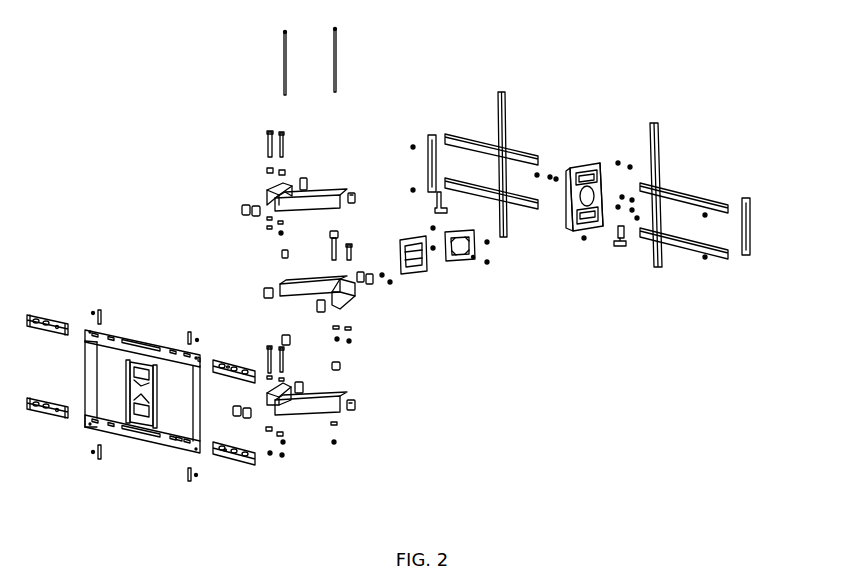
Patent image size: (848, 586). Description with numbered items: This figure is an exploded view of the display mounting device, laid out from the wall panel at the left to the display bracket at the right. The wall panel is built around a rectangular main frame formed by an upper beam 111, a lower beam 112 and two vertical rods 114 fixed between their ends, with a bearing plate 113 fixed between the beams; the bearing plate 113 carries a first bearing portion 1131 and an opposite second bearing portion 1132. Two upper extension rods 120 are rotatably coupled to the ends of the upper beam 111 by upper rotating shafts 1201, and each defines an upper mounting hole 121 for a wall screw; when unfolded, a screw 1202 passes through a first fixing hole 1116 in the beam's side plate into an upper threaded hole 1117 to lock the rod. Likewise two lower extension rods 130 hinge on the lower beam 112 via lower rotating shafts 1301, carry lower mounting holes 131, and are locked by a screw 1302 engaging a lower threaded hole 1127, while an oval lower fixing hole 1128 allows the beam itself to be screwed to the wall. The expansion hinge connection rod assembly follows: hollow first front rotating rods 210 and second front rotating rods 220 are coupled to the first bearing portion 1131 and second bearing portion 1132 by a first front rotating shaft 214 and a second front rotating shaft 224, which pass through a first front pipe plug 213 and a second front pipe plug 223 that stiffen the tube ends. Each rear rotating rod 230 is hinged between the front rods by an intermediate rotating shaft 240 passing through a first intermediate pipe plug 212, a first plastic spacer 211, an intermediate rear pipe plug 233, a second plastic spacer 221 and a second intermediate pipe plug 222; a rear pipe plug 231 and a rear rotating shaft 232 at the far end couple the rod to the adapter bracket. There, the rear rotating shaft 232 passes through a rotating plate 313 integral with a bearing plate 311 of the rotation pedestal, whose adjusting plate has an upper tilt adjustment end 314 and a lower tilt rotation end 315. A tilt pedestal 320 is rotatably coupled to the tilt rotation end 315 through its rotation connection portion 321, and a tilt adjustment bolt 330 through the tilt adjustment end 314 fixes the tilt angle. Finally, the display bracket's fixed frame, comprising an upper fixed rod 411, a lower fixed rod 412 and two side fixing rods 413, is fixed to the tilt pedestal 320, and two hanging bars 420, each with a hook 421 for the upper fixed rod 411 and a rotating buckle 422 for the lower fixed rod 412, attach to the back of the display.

The upper beam 111 is at (120, 337).
The lower beam 112 is at (115, 432).
The bearing plate 113 is at (153, 394).
The vertical rods 114 is at (133, 403).
The first fixing holes 1116 is at (201, 357).
The upper threaded hole 1117 is at (228, 366).
The lower threaded hole 1127 is at (225, 460).
The lower fixing hole 1128 is at (178, 446).
The first bearing portion 1131 is at (127, 369).
The second bearing portion 1132 is at (152, 428).
The upper extension rods 120 is at (38, 316).
The upper mounting hole 121 is at (239, 377).
The upper rotating shaft 1201 is at (101, 312).
The screw 1202 is at (92, 312).
The lower extension rods 130 is at (38, 419).
The lower mounting hole 131 is at (250, 463).
The lower rotating shaft 1301 is at (188, 481).
The screw 1302 is at (92, 454).
The first front rotating rod 210 is at (270, 190).
The first plastic spacer 211 is at (338, 235).
The first intermediate pipe plug 212 is at (356, 193).
The first front pipe plug 213 is at (241, 209).
The first front rotating shaft 214 is at (267, 140).
The second front rotating rod 220 is at (290, 408).
The second plastic spacer 221 is at (341, 366).
The second intermediate pipe plug 222 is at (357, 405).
The second front pipe plug 223 is at (233, 411).
The second front rotating shaft 224 is at (284, 356).
The rear rotating rod 230 is at (346, 294).
The rear pipe plug 231 is at (370, 284).
The rear rotating shaft 232 is at (352, 247).
The intermediate rear pipe plug 233 is at (318, 312).
The intermediate rotating shaft 240 is at (286, 62).
The bearing plate 311 is at (416, 276).
The rotating plate 313 is at (410, 240).
The tilt adjustment end 314 is at (478, 246).
The tilt rotation end 315 is at (473, 259).
The tilt pedestal 320 is at (590, 165).
The rotation connection portion 321 is at (603, 227).
The tilt adjustment bolt 330 is at (536, 173).
The upper fixed rod 411 is at (680, 185).
The lower fixed rod 412 is at (668, 240).
The side fixing rods 413 is at (751, 230).
The hanging bars 420 is at (507, 103).
The hook 421 is at (662, 141).
The rotating buckle 422 is at (620, 248).